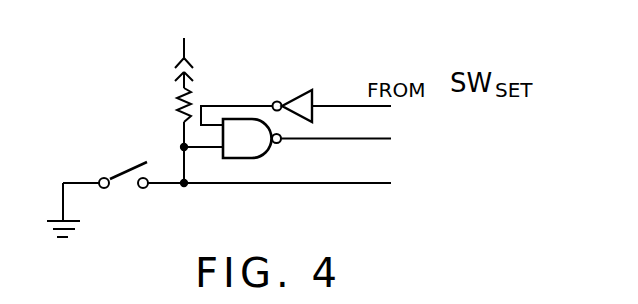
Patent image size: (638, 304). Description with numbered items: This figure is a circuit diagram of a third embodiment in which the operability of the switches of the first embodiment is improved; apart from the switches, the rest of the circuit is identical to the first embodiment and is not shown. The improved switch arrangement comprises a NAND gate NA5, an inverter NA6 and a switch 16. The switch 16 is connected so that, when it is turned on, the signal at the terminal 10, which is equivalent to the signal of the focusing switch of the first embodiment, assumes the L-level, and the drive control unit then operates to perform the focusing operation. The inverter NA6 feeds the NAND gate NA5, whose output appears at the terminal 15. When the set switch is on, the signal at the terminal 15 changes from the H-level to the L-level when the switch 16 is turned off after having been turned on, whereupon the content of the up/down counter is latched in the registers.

The switch 16 is at (132, 163).
The NAND gate NA5 is at (272, 153).
The inverter NA6 is at (296, 90).
The terminal 15 is at (355, 129).
The terminal 10 is at (364, 174).